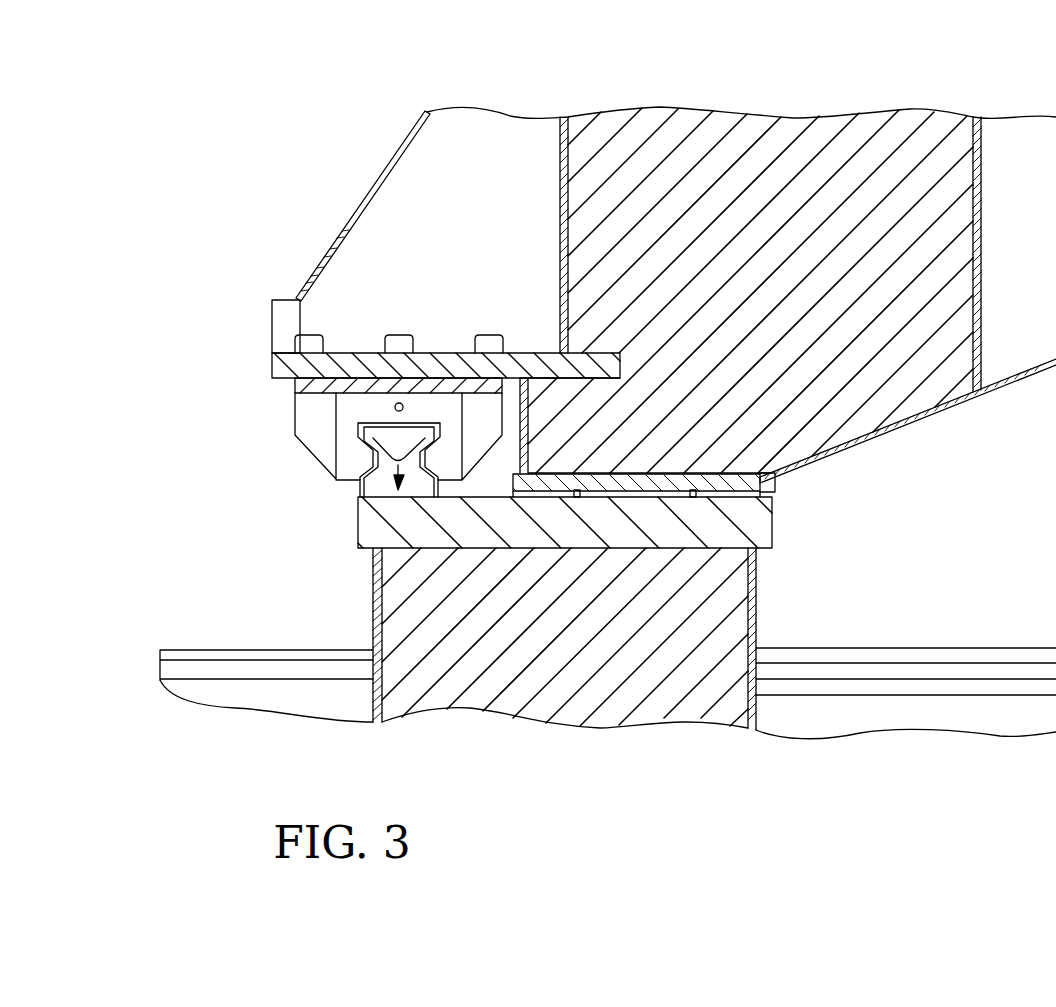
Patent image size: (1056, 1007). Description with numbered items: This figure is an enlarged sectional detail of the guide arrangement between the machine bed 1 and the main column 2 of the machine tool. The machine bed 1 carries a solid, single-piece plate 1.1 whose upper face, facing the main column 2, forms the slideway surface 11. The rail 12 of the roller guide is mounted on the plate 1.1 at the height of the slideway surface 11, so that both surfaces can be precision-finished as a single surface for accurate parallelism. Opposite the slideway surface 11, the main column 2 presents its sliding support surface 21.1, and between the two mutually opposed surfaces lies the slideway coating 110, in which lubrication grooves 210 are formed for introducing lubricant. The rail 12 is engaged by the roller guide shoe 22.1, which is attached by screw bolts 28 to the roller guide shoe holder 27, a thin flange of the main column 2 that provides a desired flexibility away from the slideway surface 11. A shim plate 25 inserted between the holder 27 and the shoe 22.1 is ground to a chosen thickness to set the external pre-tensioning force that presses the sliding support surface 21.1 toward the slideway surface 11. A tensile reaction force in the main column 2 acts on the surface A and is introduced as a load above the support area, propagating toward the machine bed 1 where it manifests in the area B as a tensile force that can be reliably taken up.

The machine bed 1 is at (652, 672).
The plate 1.1 is at (766, 550).
The slideway surface 11 is at (600, 500).
The slideway coating 110 is at (740, 500).
The rail 12 is at (373, 483).
The main column 2 is at (845, 150).
The sliding support surface 21.1 is at (755, 470).
The lubrication grooves 210 is at (817, 460).
The roller guide shoe 22.1 is at (312, 427).
The shim plate 25 is at (297, 388).
The roller guide shoe holder 27 is at (275, 365).
The screw bolts 28 is at (398, 347).
The surface A is at (377, 418).
The area B is at (403, 470).